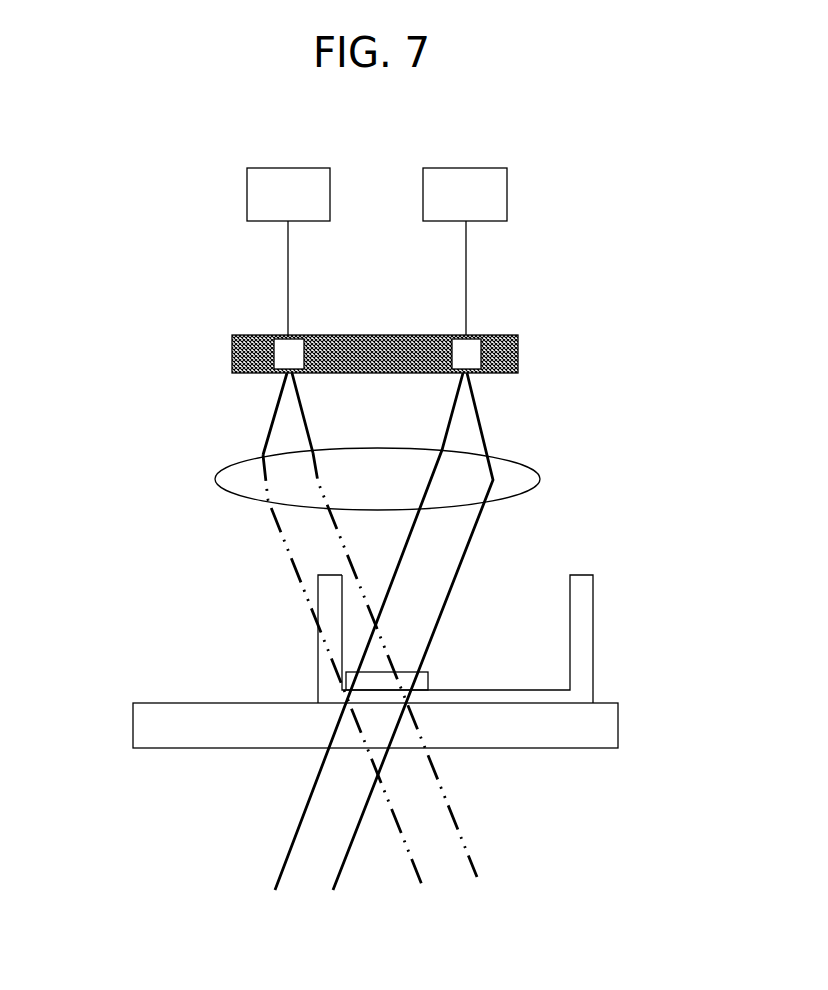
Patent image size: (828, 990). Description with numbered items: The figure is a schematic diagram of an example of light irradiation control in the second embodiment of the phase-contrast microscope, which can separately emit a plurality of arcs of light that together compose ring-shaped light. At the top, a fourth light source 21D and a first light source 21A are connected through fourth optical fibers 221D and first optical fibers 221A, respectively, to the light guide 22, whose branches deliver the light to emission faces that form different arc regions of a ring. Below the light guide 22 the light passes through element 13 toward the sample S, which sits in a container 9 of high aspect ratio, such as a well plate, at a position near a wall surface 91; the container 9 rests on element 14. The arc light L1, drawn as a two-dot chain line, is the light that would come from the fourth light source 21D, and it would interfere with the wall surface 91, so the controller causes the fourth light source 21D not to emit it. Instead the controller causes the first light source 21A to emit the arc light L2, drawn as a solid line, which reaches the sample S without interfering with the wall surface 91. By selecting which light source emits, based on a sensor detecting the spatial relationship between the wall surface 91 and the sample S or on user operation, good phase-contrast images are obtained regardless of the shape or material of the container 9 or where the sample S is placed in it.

The fourth light source 21D is at (282, 168).
The first light source 21A is at (455, 168).
The fourth optical fibers 221D is at (287, 263).
The first optical fibers 221A is at (467, 273).
The light guide 22 is at (208, 351).
The lens 13 is at (215, 480).
The arc light L1 is at (272, 552).
The arc light L2 is at (473, 540).
The container 9 is at (417, 639).
The wall surface 91 is at (318, 660).
The sample S is at (428, 678).
The stage / base plate 14 is at (133, 727).